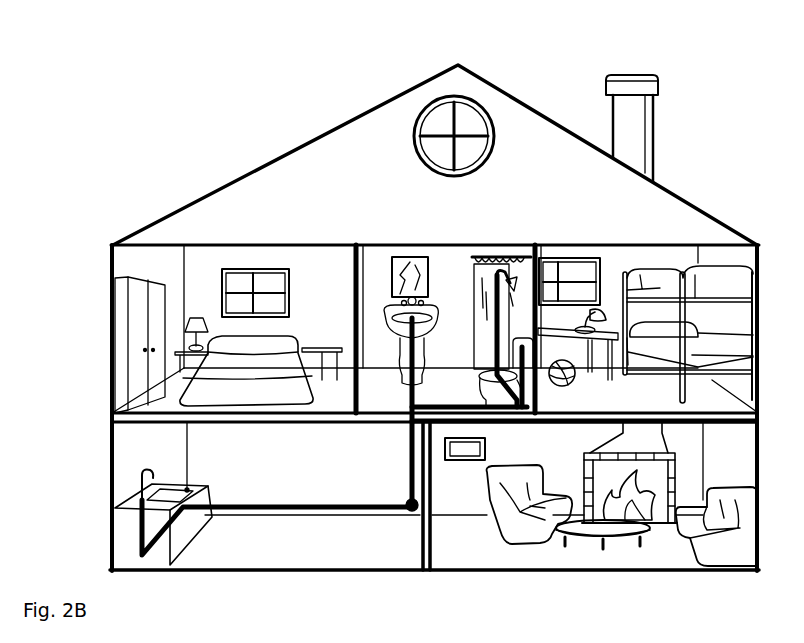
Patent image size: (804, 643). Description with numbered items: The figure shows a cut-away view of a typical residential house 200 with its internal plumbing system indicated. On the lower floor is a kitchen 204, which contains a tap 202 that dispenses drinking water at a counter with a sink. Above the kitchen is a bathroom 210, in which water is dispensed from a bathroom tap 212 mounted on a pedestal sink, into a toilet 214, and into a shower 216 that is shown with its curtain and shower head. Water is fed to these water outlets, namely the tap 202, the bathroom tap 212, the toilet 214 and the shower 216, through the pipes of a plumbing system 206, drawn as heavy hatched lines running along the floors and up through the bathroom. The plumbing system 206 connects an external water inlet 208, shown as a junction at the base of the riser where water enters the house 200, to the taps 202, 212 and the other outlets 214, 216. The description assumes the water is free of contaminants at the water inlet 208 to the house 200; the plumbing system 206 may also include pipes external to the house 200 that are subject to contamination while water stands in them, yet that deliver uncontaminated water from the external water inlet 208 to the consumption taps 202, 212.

The residential house 200 is at (690, 60).
The tap 202 is at (142, 468).
The kitchen 204 is at (251, 450).
The plumbing system 206 is at (300, 506).
The external water inlet 208 is at (406, 499).
The bathroom 210 is at (463, 273).
The bathroom tap 212 is at (426, 304).
The toilet 214 is at (482, 396).
The shower 216 is at (471, 357).